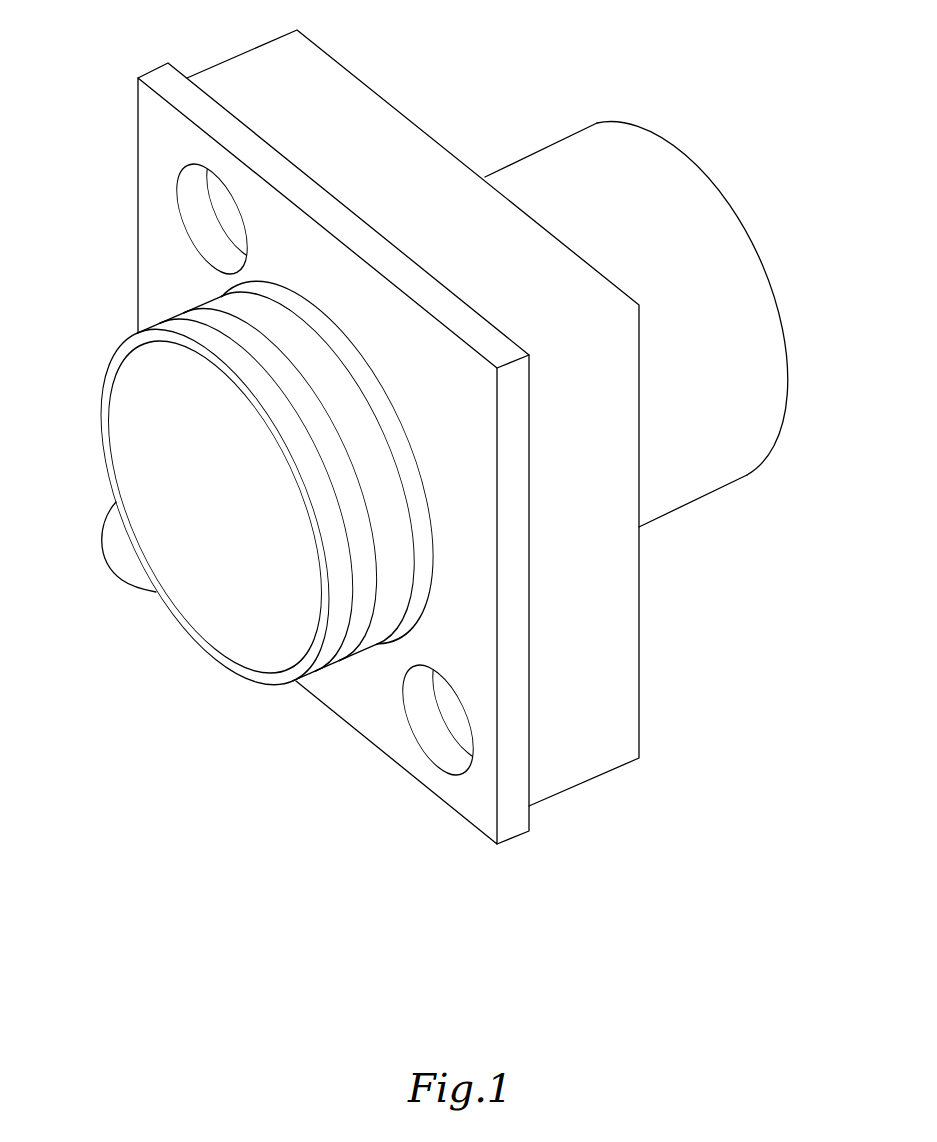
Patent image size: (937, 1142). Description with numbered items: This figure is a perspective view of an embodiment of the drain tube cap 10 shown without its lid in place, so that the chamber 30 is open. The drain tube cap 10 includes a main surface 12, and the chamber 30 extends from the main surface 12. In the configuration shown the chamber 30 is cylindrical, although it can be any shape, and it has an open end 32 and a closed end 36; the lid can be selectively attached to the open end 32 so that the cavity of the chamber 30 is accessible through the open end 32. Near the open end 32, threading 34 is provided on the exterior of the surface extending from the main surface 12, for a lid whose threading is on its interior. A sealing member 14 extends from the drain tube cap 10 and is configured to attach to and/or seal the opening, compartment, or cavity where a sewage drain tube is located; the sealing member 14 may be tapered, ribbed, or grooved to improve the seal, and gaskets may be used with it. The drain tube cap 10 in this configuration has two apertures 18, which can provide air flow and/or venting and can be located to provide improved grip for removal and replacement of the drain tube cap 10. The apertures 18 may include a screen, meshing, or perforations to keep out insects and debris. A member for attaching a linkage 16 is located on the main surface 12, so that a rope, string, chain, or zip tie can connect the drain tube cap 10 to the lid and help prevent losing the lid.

The drain tube cap 10 is at (512, 38).
The main surface 12 is at (346, 706).
The sealing member 14 is at (608, 606).
The member for attaching a linkage 16 is at (118, 560).
The aperture 18 is at (200, 218).
The chamber 30 is at (639, 324).
The open end 32 is at (137, 433).
The threading 34 is at (375, 472).
The closed end 36 is at (717, 182).